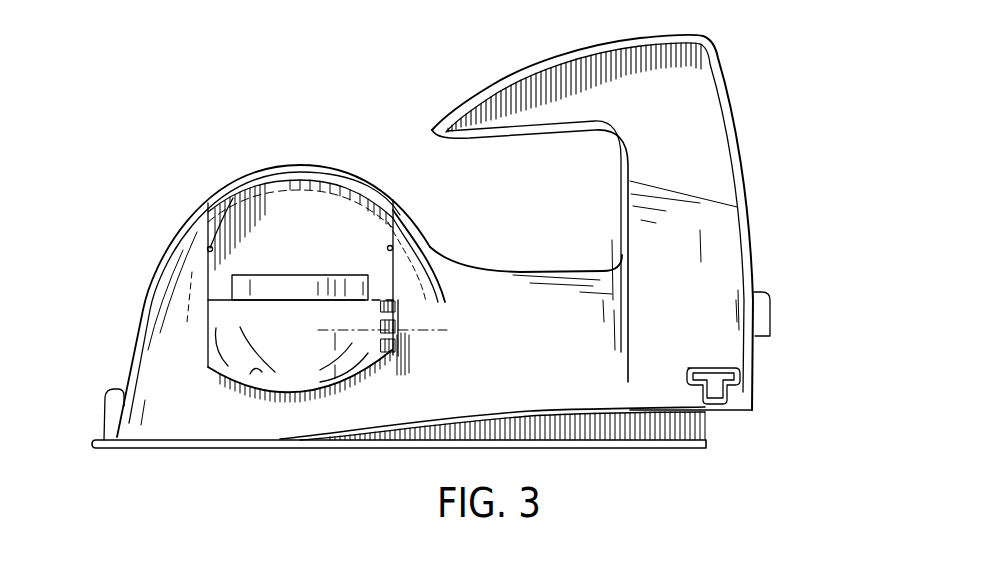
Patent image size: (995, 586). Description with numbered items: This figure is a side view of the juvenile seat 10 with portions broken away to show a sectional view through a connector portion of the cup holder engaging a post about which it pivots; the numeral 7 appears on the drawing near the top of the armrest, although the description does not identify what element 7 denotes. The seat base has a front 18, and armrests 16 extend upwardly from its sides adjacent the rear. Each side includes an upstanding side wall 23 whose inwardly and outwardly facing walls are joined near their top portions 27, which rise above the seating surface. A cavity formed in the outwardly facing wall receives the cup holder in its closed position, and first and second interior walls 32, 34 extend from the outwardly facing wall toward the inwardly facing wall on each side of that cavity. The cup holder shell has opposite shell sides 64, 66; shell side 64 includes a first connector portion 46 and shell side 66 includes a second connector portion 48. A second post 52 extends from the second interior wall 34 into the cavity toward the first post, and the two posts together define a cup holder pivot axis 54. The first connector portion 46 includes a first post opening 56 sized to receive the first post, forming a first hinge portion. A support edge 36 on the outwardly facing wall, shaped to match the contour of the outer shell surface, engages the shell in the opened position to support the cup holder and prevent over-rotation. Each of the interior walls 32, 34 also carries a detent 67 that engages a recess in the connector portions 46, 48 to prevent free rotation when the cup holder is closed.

The handle hatching surface 7 is at (636, 28).
The juvenile seat 10 is at (757, 366).
The armrests 16 is at (553, 60).
The front 18 is at (103, 418).
The upstanding side wall 23 is at (173, 387).
The top portions 27 is at (412, 218).
The first interior wall 32 is at (228, 257).
The second interior wall 34 is at (393, 283).
The support edge 36 is at (243, 367).
The first connector portion 46 is at (207, 340).
The second connector portion 48 is at (398, 316).
The second post 52 is at (379, 388).
The cup holder pivot axis 54 is at (338, 395).
The first post opening 56 is at (400, 340).
The shell side 64 is at (213, 346).
The shell side 66 is at (397, 305).
The detent 67 is at (252, 190).